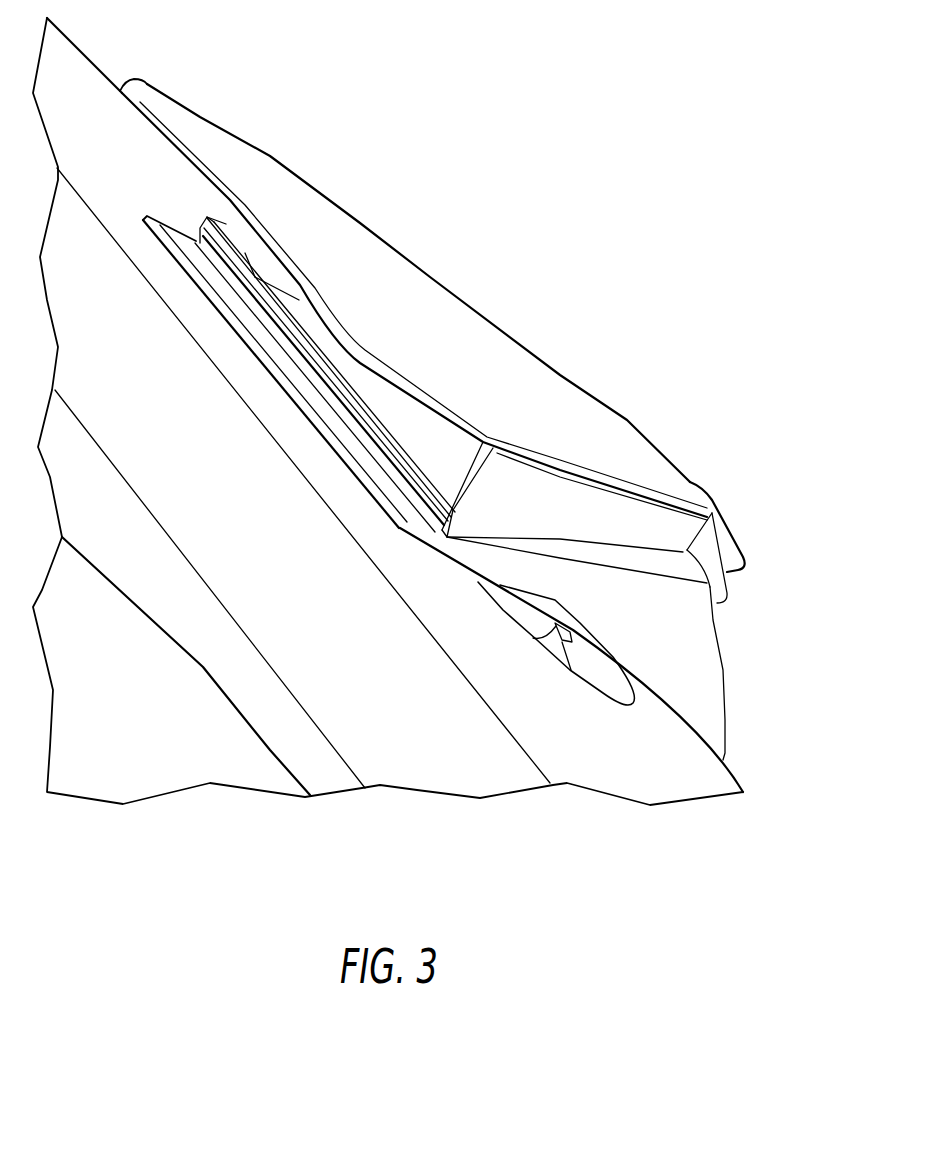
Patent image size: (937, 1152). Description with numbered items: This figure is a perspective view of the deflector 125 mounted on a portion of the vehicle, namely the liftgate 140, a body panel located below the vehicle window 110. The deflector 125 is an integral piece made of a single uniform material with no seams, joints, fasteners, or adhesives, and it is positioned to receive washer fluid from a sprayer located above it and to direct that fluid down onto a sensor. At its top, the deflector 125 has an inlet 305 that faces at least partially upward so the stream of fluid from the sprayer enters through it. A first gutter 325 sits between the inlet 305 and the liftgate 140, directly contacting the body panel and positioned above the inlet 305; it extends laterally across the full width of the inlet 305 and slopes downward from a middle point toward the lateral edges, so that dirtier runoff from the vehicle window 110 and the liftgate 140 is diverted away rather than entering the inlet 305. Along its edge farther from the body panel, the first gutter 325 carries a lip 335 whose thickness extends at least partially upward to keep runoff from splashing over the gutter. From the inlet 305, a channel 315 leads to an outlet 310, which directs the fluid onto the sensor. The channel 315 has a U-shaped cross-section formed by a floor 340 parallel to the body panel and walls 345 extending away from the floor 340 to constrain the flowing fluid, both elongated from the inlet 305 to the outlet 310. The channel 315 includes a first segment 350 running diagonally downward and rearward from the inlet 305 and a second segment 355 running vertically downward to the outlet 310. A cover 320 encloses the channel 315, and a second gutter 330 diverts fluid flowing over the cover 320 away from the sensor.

The vehicle window 110 is at (152, 743).
The deflector 125 is at (350, 212).
The liftgate 140 is at (630, 745).
The inlet 305 is at (475, 472).
The outlet 310 is at (718, 603).
The channel 315 is at (560, 508).
The cover 320 is at (440, 300).
The first gutter 325 is at (330, 400).
The second gutter 330 is at (723, 515).
The lip 335 is at (320, 378).
The floor 340 is at (412, 433).
The walls 345 is at (248, 253).
The first segment 350 is at (597, 512).
The second segment 355 is at (708, 550).